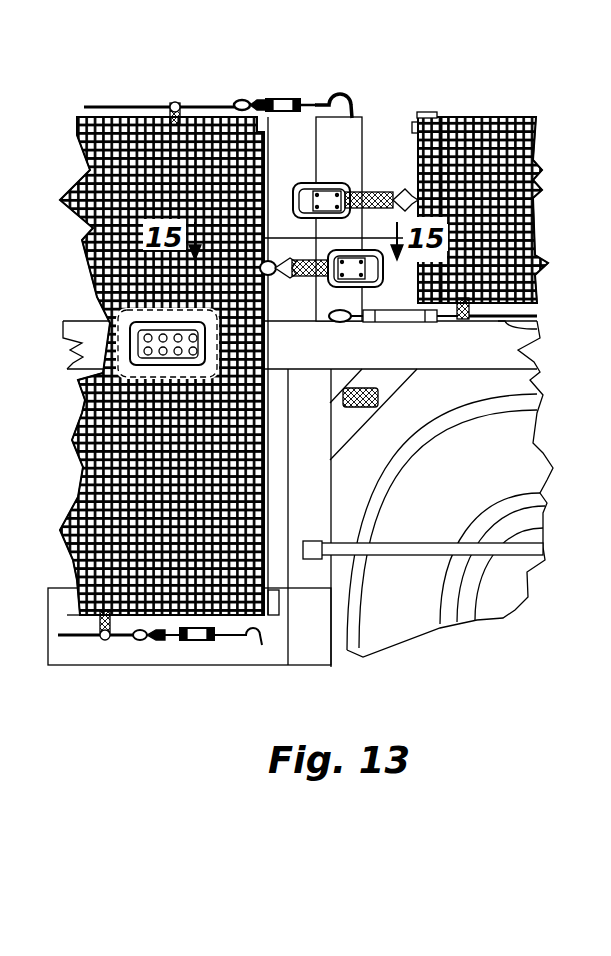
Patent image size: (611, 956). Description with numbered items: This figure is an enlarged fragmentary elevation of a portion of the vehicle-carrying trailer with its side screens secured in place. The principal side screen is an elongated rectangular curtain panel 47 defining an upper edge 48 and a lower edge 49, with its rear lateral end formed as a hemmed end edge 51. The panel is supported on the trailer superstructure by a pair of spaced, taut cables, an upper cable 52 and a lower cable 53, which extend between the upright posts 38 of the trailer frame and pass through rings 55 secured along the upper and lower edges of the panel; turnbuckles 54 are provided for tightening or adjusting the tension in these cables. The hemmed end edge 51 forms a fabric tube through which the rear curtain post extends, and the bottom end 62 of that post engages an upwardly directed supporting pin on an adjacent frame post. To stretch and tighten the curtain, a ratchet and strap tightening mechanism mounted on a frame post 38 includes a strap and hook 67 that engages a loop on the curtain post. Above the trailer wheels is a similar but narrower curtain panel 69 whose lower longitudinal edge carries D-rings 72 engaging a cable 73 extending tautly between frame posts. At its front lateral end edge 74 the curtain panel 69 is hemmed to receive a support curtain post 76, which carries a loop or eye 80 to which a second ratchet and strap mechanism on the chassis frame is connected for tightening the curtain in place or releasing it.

The upright post 38 is at (332, 128).
The curtain panel 47 is at (120, 632).
The upper edge 48 is at (83, 120).
The lower edge 49 is at (70, 637).
The rear lateral hemmed end edge 51 is at (264, 533).
The upper cable 52 is at (118, 107).
The lower cable 53 is at (87, 638).
The turnbuckle 54 is at (275, 98).
The ring 55 is at (172, 104).
The bottom end of rear curtain post 62 is at (260, 640).
The strap and hook 67 is at (300, 282).
The curtain panel 69 is at (497, 140).
The D-ring 72 is at (462, 322).
The cable 73 is at (535, 328).
The front lateral end edge 74 is at (415, 143).
The curtain post 76 is at (424, 112).
The loop or eye 80 is at (400, 197).